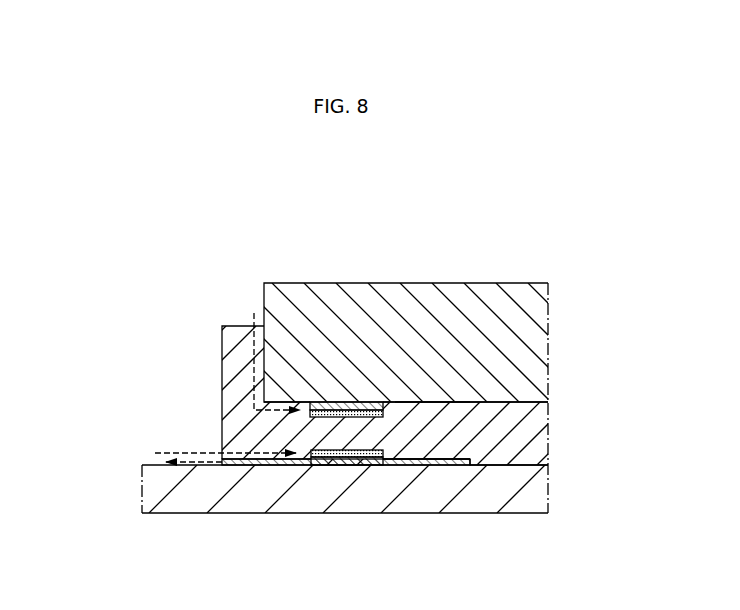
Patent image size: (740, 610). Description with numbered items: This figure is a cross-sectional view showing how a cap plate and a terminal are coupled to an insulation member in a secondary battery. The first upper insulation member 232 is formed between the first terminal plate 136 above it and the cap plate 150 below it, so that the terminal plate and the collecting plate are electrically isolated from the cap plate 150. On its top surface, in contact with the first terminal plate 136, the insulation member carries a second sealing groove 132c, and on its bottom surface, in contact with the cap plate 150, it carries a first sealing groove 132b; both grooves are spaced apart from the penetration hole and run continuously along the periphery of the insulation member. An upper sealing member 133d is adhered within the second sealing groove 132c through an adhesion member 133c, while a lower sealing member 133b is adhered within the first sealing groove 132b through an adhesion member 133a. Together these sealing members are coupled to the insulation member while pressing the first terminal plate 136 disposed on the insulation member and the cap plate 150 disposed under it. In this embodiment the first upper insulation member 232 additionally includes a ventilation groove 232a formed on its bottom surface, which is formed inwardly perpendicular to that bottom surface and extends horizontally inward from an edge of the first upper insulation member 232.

The first terminal plate 136 is at (367, 296).
The first upper insulation member 232 is at (211, 393).
The ventilation groove 232a is at (490, 460).
The cap plate 150 is at (152, 488).
The second sealing groove 132c is at (308, 412).
The upper sealing member 133d is at (388, 409).
The adhesion member 133c is at (408, 417).
The adhesion member 133a is at (342, 466).
The lower sealing member 133b is at (318, 466).
The first sealing groove 132b is at (407, 466).